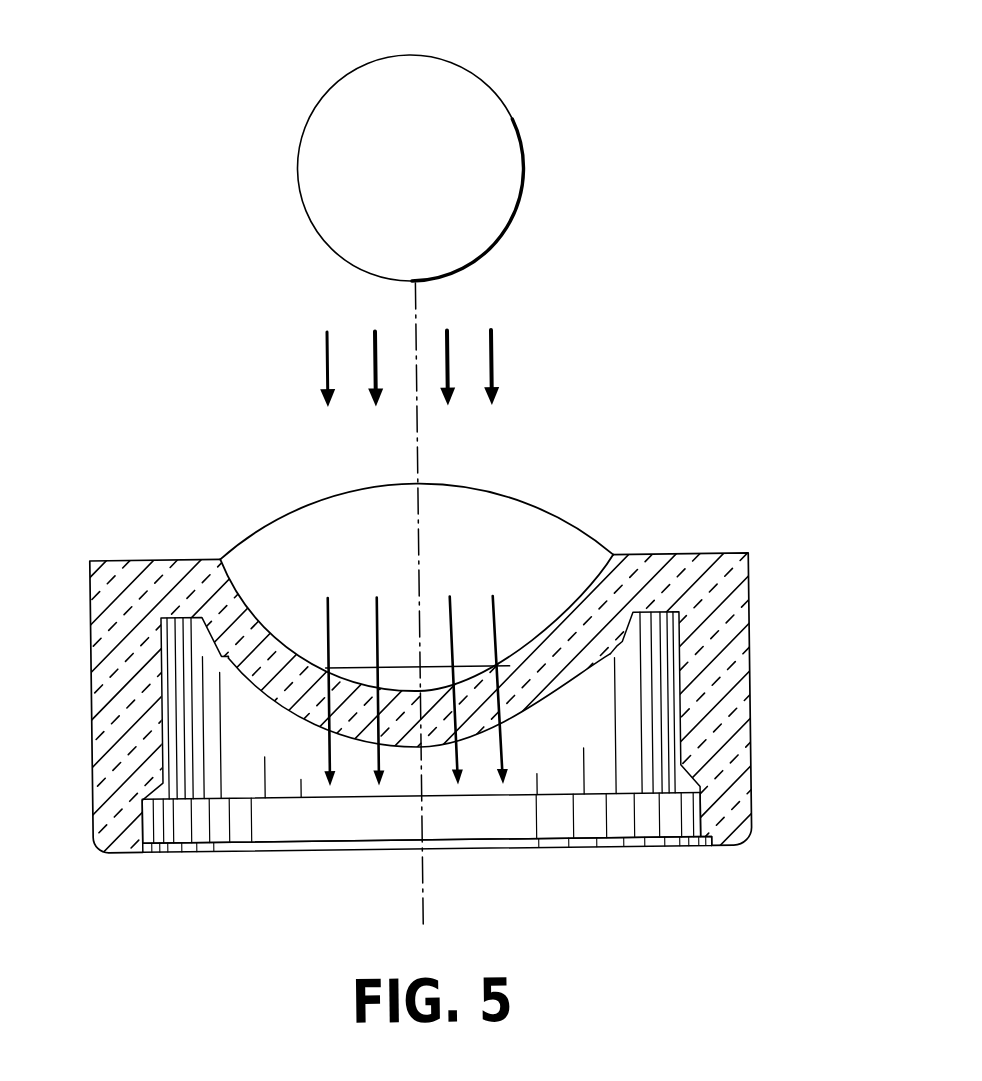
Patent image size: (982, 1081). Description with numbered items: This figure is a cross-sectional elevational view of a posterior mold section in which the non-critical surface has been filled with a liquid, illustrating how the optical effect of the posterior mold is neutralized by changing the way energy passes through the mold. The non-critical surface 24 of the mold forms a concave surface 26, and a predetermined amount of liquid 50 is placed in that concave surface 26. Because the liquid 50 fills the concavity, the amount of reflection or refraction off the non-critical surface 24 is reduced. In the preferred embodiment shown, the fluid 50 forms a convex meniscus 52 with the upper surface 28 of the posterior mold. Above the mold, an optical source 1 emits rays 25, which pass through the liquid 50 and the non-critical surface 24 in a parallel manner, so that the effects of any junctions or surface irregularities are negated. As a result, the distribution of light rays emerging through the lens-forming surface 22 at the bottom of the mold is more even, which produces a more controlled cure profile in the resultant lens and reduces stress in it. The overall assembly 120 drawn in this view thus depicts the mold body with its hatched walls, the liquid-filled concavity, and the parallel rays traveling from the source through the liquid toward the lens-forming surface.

The optical source 1 is at (507, 96).
The rays 25 is at (497, 348).
The concave surface 26 is at (329, 621).
The liquid 50 is at (426, 570).
The convex meniscus 52 is at (550, 502).
The non-critical surface 24 is at (573, 609).
The lens-forming surface 22 is at (570, 692).
The upper surface 28 is at (692, 555).
The optical sensor assembly 120 is at (491, 653).